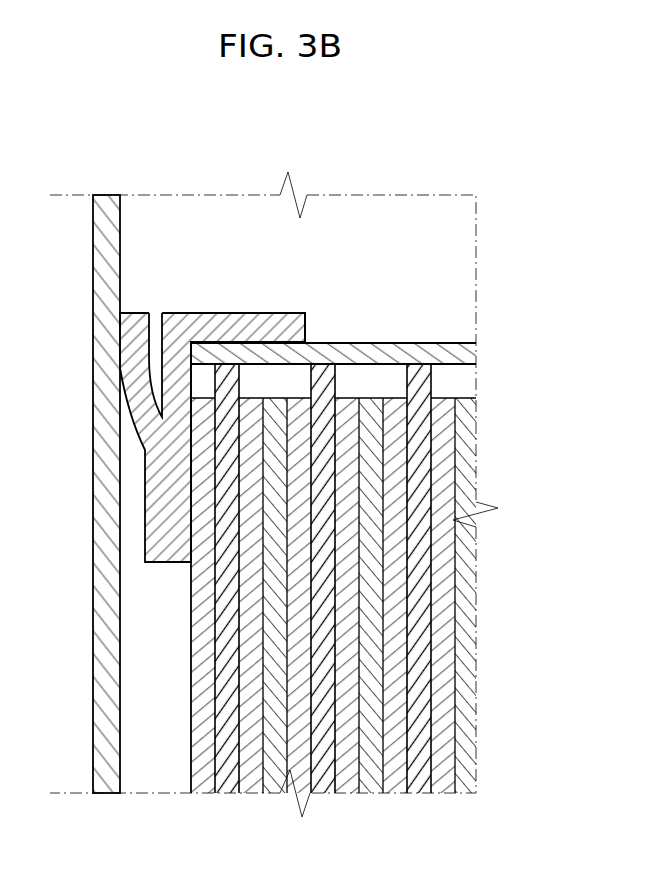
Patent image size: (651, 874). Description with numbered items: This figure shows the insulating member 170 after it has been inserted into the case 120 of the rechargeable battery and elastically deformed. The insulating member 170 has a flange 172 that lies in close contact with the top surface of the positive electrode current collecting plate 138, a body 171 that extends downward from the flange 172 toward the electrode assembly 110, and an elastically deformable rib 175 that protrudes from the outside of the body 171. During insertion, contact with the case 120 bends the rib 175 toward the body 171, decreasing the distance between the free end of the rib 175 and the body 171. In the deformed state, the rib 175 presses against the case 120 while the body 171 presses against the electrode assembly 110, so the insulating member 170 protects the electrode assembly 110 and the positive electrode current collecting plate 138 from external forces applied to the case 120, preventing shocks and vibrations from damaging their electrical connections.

The electrode assembly 110 is at (187, 735).
The case 120 is at (97, 645).
The positive electrode current collecting plate 138 is at (392, 350).
The insulating member 170 is at (200, 348).
The body 171 is at (162, 511).
The flange 172 is at (208, 323).
The rib 175 is at (137, 361).